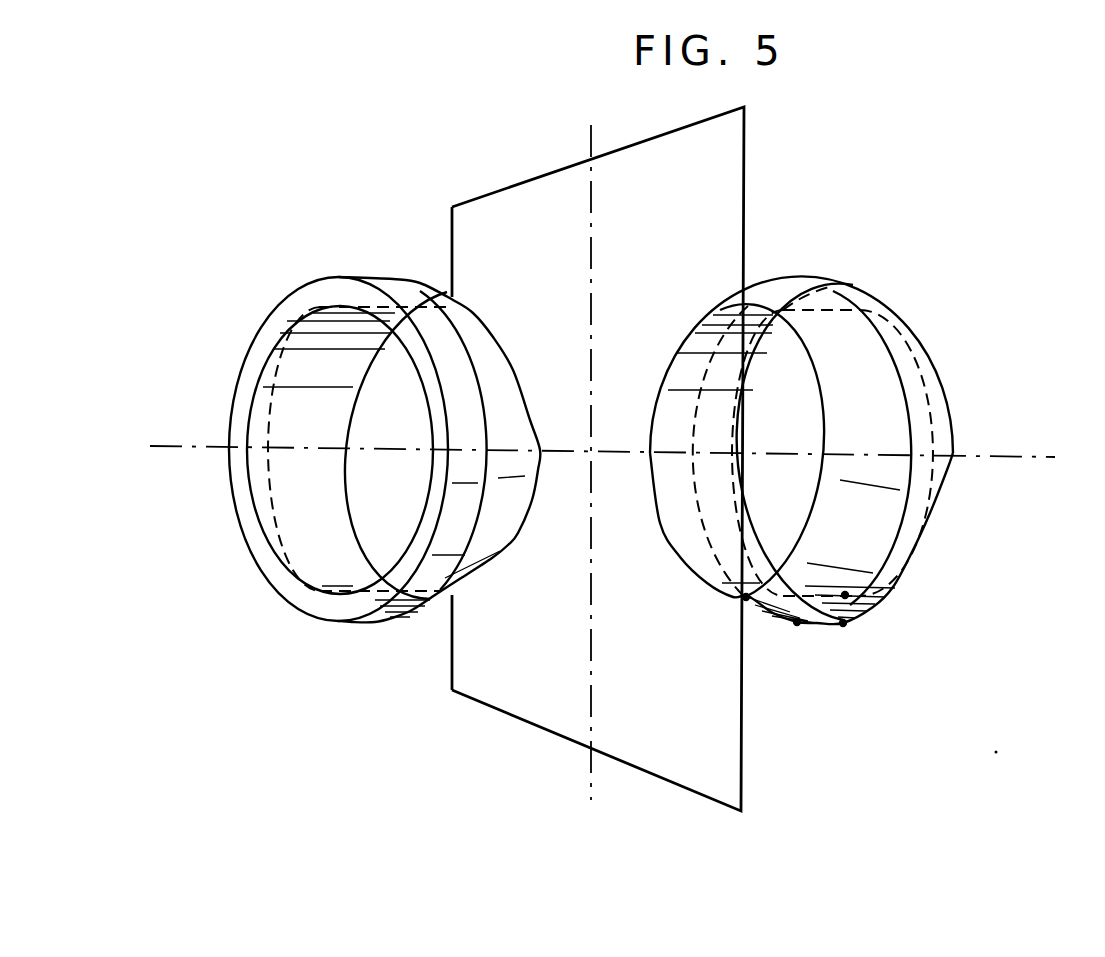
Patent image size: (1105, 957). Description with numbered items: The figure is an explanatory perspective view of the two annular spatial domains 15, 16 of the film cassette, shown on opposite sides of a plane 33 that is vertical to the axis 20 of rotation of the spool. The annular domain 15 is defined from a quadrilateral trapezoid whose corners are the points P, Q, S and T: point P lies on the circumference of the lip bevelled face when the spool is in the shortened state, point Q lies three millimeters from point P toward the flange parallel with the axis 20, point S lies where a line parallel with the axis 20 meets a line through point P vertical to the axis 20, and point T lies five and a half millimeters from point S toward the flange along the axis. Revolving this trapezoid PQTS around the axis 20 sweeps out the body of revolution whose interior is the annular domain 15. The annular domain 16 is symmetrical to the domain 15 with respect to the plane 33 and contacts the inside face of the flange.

The annular spatial domain 15 is at (893, 290).
The annular spatial domain 16 is at (342, 277).
The axis of rotation 20 is at (1045, 457).
The plane 33 is at (745, 150).
The point P is at (845, 628).
The point Q is at (798, 628).
The point S is at (846, 592).
The point T is at (752, 606).